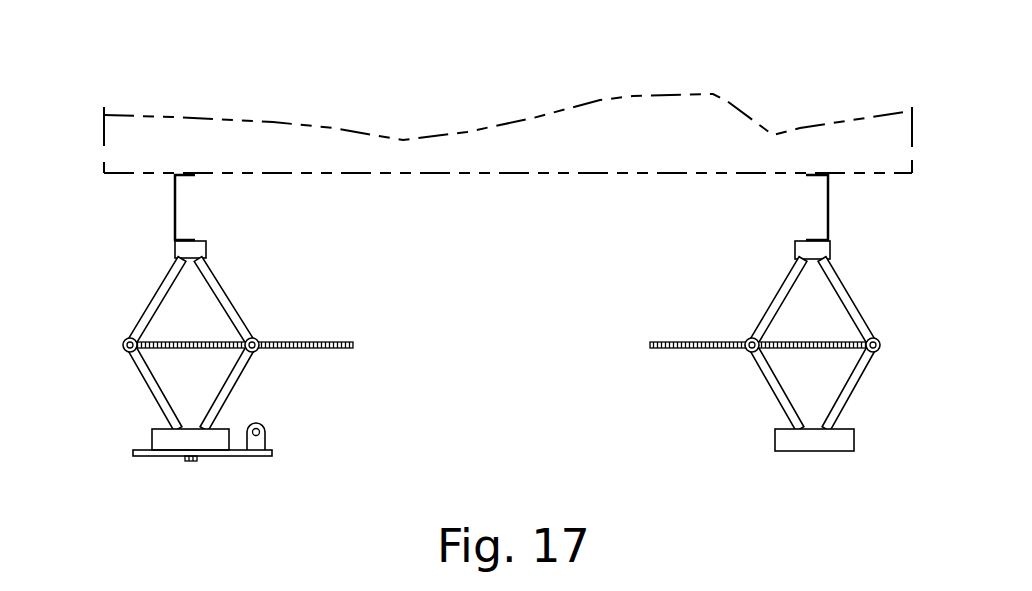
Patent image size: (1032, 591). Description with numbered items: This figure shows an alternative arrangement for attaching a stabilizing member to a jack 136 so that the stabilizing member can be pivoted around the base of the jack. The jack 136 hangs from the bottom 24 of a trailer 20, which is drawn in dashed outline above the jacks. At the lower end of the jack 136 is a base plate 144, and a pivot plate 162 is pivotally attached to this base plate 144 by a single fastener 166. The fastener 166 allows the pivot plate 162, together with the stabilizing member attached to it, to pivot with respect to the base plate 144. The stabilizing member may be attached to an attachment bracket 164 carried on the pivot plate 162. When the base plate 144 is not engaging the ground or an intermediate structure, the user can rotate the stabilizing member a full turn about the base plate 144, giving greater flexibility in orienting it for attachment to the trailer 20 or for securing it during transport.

The trailer 20 is at (540, 80).
The bottom 24 is at (556, 174).
The jack 136 is at (193, 342).
The base plate 144 is at (230, 428).
The pivot plate 162 is at (272, 454).
The attachment bracket 164 is at (266, 433).
The fastener 166 is at (192, 462).